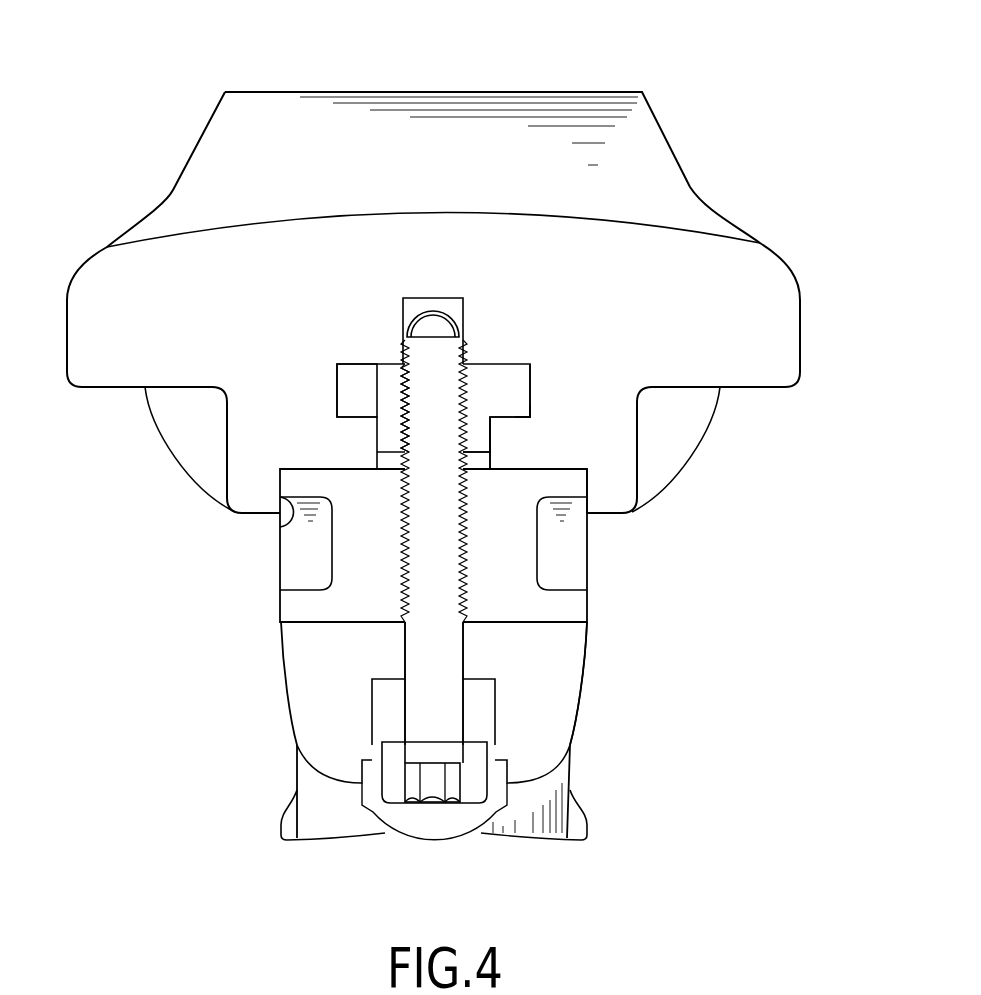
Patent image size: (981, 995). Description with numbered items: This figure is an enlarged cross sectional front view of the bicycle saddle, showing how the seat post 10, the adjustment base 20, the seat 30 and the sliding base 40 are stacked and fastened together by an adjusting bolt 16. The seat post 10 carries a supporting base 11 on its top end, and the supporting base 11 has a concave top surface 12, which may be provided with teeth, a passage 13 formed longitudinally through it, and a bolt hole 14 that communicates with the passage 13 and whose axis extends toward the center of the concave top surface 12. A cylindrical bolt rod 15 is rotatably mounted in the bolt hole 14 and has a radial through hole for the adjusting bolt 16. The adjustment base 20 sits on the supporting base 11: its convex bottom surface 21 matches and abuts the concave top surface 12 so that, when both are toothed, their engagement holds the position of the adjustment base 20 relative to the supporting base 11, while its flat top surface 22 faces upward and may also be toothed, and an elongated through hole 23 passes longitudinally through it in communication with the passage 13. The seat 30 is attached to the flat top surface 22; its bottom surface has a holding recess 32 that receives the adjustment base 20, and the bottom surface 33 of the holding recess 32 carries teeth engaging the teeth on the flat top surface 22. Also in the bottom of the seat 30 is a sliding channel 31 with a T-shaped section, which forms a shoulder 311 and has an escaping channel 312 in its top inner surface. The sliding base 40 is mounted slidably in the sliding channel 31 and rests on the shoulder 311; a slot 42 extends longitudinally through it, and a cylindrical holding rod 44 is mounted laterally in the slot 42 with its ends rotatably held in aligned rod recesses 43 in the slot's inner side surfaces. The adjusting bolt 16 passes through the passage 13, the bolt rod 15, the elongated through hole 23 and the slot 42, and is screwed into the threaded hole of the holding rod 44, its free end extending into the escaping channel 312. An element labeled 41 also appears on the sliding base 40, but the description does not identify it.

The seat post 10 is at (630, 845).
The supporting base 11 is at (550, 688).
The concave top surface 12 is at (298, 621).
The passage 13 is at (403, 645).
The bolt hole 14 is at (485, 712).
The bolt rod 15 is at (366, 727).
The adjusting bolt 16 is at (468, 784).
The adjustment base 20 is at (604, 590).
The convex bottom surface 21 is at (527, 623).
The flat top surface 22 is at (328, 467).
The elongated through hole 23 is at (405, 575).
The seat 30 is at (612, 77).
The sliding channel 31 is at (522, 368).
The shoulder 311 is at (526, 403).
The escaping channel 312 is at (452, 302).
The holding recess 32 is at (282, 501).
The bottom surface 33 is at (580, 474).
The sliding base 40 is at (342, 354).
The nut body 41 is at (512, 418).
The slot 42 is at (460, 450).
The rod recess 43 is at (385, 410).
The holding rod 44 is at (393, 384).